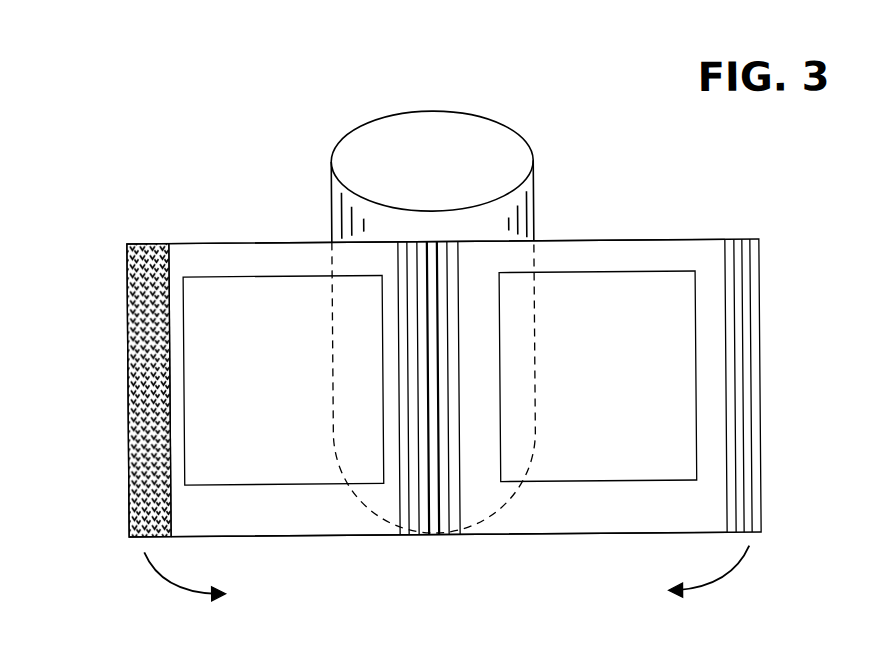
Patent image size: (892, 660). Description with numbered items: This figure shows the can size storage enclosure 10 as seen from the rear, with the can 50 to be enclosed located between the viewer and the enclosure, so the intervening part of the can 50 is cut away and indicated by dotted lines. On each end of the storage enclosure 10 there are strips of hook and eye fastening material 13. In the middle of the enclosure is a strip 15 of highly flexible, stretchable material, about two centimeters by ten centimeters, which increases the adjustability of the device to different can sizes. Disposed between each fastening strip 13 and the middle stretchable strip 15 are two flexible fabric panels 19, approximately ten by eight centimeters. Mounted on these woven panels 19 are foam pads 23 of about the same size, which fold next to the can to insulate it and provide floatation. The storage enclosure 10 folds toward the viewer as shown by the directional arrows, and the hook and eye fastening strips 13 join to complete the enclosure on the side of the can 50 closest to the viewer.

The can size storage enclosure 10 is at (217, 182).
The hook and eye fastening strips 13 is at (138, 290).
The middle stretchable strip 15 is at (418, 529).
The flexible fabric panels 19 is at (688, 250).
The foam pads 23 is at (212, 361).
The can 50 is at (527, 142).